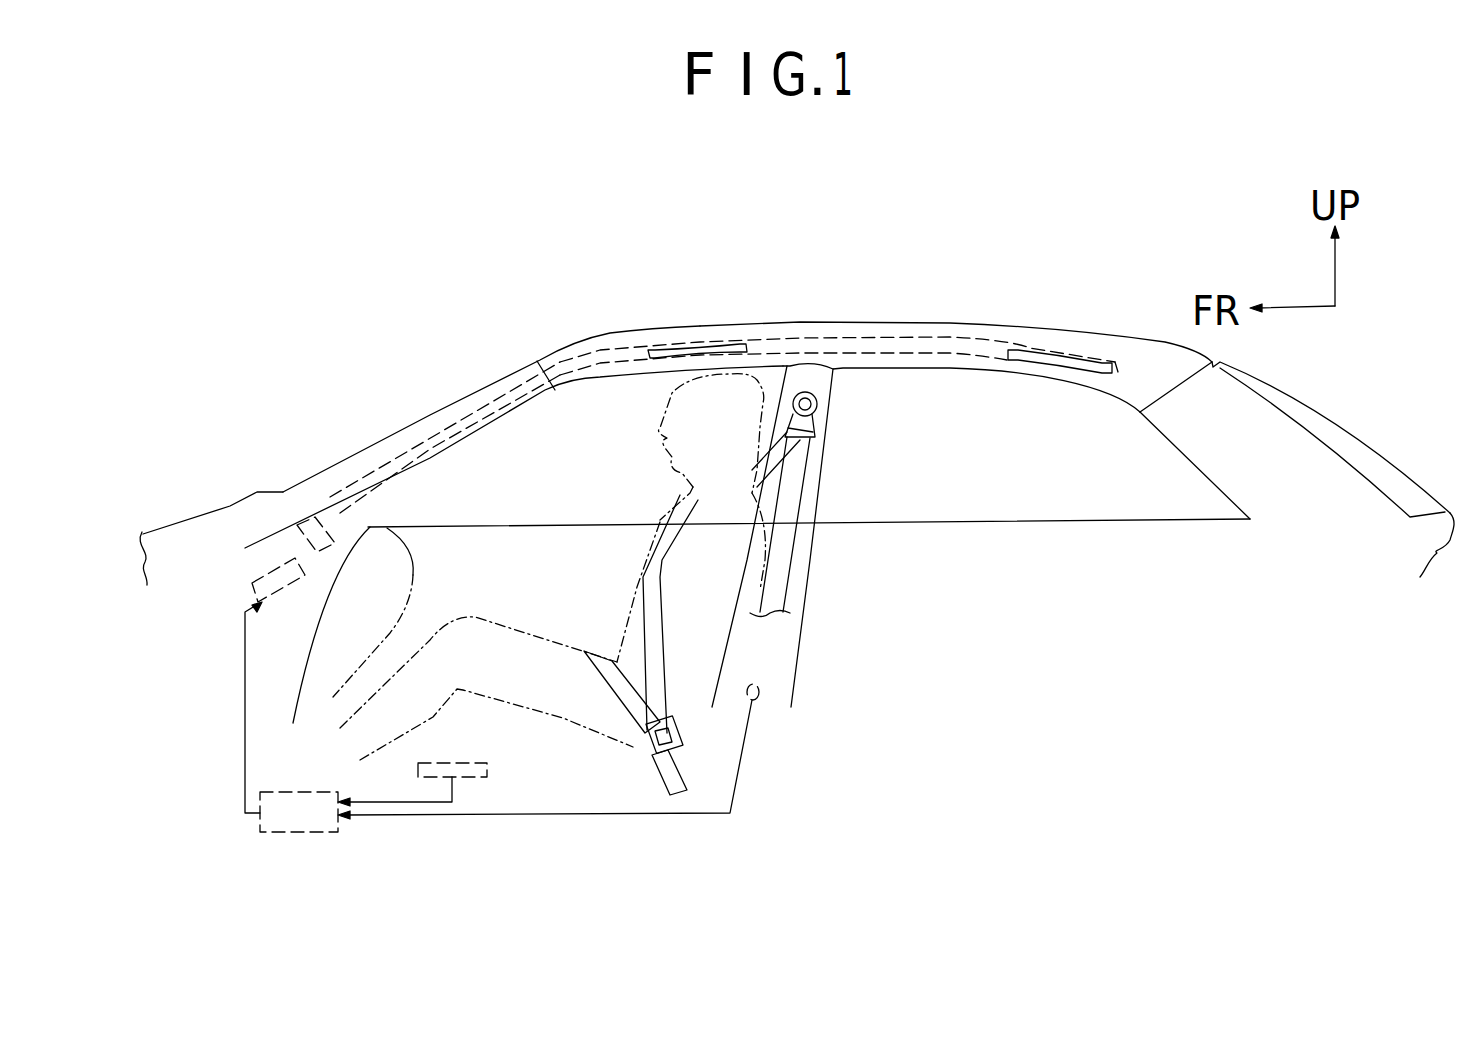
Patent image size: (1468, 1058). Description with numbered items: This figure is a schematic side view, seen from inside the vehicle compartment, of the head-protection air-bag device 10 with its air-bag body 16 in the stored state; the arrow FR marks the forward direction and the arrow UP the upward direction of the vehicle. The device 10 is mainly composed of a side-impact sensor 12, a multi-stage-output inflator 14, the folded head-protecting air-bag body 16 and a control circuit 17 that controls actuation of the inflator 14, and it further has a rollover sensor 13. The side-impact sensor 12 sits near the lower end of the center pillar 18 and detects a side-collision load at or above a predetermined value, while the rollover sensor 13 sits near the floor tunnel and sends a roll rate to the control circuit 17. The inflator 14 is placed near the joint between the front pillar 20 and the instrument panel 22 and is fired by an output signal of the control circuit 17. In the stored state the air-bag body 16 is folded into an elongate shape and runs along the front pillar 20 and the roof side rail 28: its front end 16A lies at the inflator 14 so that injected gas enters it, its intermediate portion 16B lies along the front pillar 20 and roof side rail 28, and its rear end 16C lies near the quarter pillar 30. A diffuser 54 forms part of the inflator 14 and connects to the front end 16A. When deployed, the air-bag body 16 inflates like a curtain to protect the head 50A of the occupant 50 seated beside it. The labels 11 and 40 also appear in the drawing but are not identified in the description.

The head-protection air-bag device 10 is at (924, 328).
The seat belt webbing 11 is at (800, 503).
The side-impact sensor 12 is at (760, 705).
The rollover sensor 13 is at (445, 762).
The multi-stage-output inflator 14 is at (297, 596).
The head-protecting air-bag body 16 is at (592, 346).
The front end of air-bag body 16A is at (357, 493).
The intermediate portion of air-bag body 16B is at (970, 340).
The rear end of air-bag body 16C is at (1057, 350).
The control circuit 17 is at (292, 832).
The center pillar 18 is at (835, 462).
The front pillar 20 is at (471, 448).
The instrument panel 22 is at (420, 560).
The roof side rail 28 is at (858, 333).
The quarter pillar 30 is at (1174, 447).
The front pillar 40 is at (430, 430).
The occupant 50 is at (680, 495).
The head 50A is at (760, 393).
The diffuser 54 is at (378, 573).